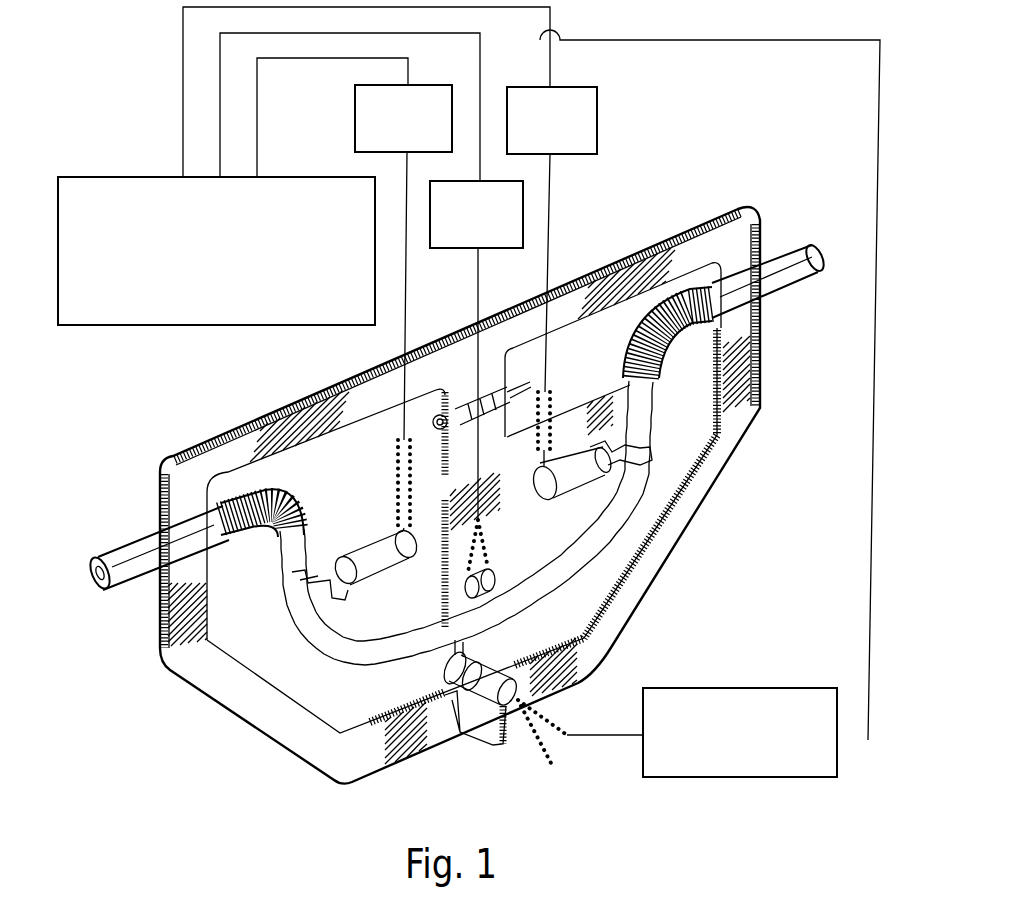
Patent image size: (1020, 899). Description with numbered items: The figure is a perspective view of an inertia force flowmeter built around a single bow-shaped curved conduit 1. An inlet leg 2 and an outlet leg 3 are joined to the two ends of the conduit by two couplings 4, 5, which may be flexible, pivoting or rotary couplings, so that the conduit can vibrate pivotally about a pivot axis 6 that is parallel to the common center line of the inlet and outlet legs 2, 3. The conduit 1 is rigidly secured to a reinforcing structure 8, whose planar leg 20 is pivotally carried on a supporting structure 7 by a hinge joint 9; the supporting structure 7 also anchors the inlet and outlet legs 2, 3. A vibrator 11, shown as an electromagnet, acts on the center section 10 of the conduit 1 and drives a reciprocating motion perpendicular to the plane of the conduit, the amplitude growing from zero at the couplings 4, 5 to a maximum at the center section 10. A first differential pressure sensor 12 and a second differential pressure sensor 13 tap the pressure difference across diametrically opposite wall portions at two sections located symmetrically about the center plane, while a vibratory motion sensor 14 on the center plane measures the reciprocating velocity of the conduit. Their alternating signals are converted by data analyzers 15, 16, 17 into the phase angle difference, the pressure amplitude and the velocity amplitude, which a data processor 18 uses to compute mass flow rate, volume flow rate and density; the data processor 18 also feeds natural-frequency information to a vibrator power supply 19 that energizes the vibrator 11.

The curved conduit 1 is at (642, 522).
The inlet leg 2 is at (135, 548).
The outlet leg 3 is at (790, 262).
The coupling 4 is at (255, 540).
The coupling 5 is at (690, 345).
The pivot axis 6 is at (420, 433).
The supporting structure 7 is at (207, 698).
The reinforcing structure 8 is at (437, 560).
The hinge joint 9 is at (480, 375).
The center section 10 is at (450, 658).
The vibrator 11 is at (447, 705).
The first differential pressure sensor 12 is at (372, 614).
The second differential pressure sensor 13 is at (652, 475).
The vibratory motion sensor 14 is at (493, 587).
The data analyzer 15 is at (355, 117).
The data analyzer 16 is at (597, 118).
The data analyzer 17 is at (462, 250).
The data processor 18 is at (108, 177).
The vibrator power supply 19 is at (728, 777).
The planar leg 20 is at (500, 467).